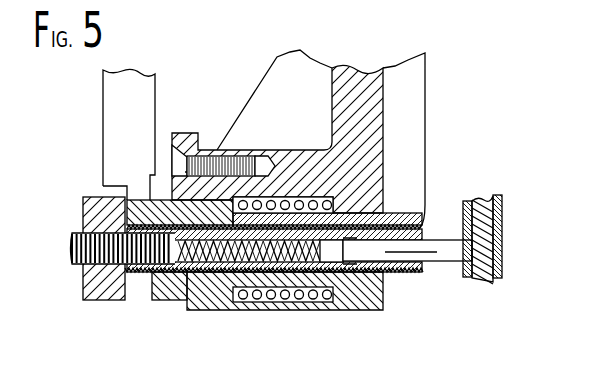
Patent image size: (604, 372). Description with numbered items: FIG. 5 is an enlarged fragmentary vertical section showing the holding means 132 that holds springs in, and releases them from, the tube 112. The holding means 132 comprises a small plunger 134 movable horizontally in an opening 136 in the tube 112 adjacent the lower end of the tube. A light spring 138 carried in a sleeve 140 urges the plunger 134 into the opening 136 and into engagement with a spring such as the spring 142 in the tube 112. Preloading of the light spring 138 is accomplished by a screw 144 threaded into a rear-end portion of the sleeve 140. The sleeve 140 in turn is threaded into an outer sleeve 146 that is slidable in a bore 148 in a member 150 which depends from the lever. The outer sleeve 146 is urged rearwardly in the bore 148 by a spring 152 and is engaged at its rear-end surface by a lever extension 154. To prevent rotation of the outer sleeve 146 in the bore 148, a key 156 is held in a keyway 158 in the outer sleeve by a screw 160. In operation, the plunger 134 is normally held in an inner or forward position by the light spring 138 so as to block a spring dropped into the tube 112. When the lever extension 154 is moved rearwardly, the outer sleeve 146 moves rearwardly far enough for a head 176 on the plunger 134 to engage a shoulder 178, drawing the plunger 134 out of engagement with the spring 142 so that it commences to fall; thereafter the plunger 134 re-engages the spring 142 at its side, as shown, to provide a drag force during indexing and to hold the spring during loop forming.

The tube 112 is at (503, 205).
The holding means 132 is at (61, 270).
The plunger 134 is at (448, 265).
The opening 136 is at (460, 248).
The light spring 138 is at (169, 297).
The sleeve 140 is at (208, 270).
The spring 142 is at (503, 252).
The screw 144 is at (65, 247).
The outer sleeve 146 is at (143, 293).
The bore 148 is at (273, 300).
The member 150 is at (347, 305).
The spring 152 is at (250, 295).
The lever extension 154 is at (113, 118).
The key 156 is at (182, 134).
The keyway 158 is at (162, 197).
The screw 160 is at (198, 150).
The head 176 is at (330, 252).
The shoulder 178 is at (390, 277).